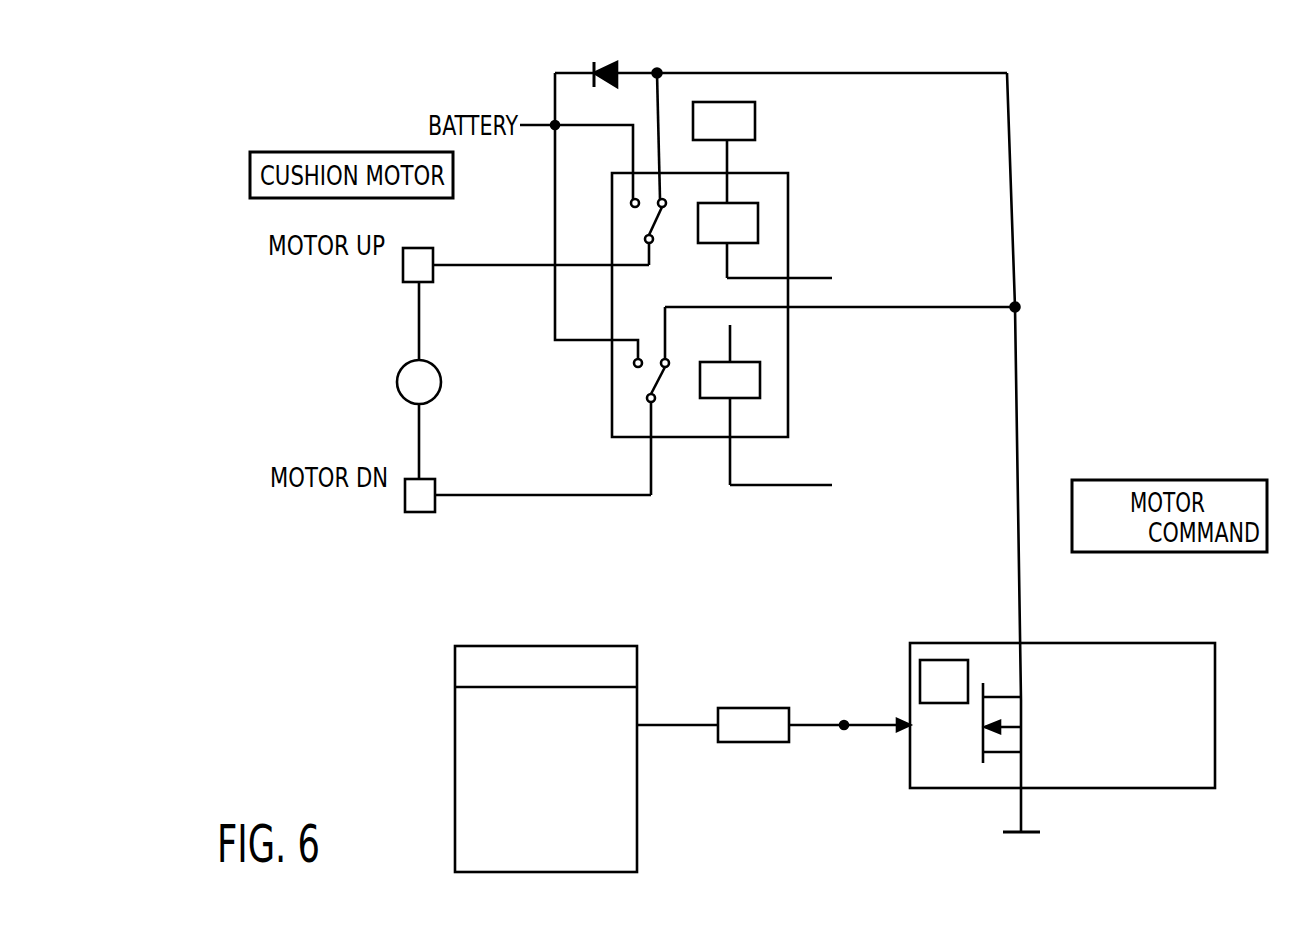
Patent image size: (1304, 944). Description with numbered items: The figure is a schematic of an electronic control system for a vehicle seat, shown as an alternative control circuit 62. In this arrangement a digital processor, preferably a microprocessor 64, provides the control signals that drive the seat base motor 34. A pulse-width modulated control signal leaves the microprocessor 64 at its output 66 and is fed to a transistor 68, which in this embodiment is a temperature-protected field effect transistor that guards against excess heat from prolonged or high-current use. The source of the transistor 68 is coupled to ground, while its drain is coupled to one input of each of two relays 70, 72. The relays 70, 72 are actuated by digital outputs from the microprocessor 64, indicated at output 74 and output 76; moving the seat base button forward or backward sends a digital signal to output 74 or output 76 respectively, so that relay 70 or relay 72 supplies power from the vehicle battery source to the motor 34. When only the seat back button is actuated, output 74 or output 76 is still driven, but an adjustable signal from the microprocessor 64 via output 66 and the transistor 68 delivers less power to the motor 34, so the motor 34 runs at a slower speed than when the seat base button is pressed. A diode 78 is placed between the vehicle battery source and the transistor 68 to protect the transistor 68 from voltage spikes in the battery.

The seat base motor 34 is at (441, 380).
The control circuit 62 is at (1052, 136).
The microprocessor 64 is at (530, 645).
The microprocessor output 66 is at (677, 724).
The transistor 68 is at (1215, 715).
The relay 70 is at (793, 172).
The relay 72 is at (790, 355).
The output 74 is at (808, 278).
The output 76 is at (812, 485).
The diode 78 is at (602, 62).